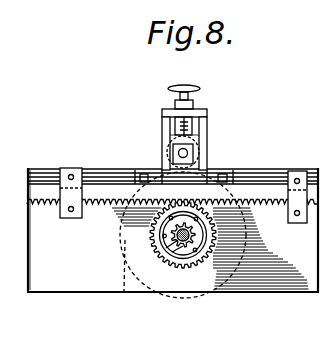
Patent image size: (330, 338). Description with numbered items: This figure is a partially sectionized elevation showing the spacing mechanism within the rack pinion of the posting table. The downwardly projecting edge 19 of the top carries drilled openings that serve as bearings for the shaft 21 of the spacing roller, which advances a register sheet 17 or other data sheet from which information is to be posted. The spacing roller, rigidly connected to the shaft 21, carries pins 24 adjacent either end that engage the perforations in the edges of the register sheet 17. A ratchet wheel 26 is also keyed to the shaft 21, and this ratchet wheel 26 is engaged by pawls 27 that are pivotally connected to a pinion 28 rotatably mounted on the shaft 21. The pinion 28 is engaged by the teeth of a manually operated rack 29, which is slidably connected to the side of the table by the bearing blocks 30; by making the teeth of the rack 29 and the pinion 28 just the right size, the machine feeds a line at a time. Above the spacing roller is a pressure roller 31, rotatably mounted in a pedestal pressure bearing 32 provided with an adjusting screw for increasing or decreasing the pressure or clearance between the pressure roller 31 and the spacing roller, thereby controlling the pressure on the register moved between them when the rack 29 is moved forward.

The register sheet 17 is at (259, 173).
The downwardly projecting edges 19 is at (58, 282).
The shaft 21 is at (125, 286).
The pins 24 is at (172, 294).
The ratchet wheel 26 is at (165, 250).
The pawls 27 is at (194, 190).
The pinion 28 is at (162, 235).
The rack 29 is at (101, 186).
The bearing blocks 30 is at (68, 172).
The pressure roller 31 is at (203, 141).
The pedestal pressure bearing 32 is at (201, 89).